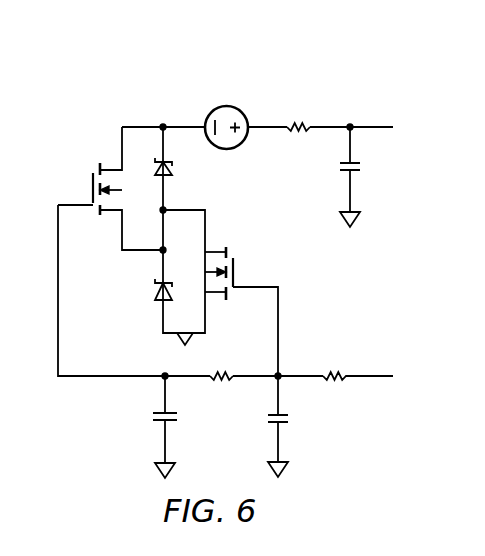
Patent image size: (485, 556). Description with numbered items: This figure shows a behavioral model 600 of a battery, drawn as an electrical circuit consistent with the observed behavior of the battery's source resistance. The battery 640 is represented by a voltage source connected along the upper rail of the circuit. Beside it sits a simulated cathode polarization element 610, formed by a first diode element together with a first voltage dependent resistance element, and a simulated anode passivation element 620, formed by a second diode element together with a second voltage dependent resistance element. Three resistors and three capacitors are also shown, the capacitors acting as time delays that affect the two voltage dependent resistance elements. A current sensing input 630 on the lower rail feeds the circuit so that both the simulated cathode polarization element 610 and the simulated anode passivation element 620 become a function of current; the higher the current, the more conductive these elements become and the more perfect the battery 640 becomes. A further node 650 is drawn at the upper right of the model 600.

The behavioral model 600 is at (117, 58).
The simulated cathode polarization element 610 is at (92, 182).
The simulated anode passivation element 620 is at (234, 264).
The current sensing input 630 is at (372, 378).
The battery 640 is at (227, 105).
The node 650 is at (370, 124).